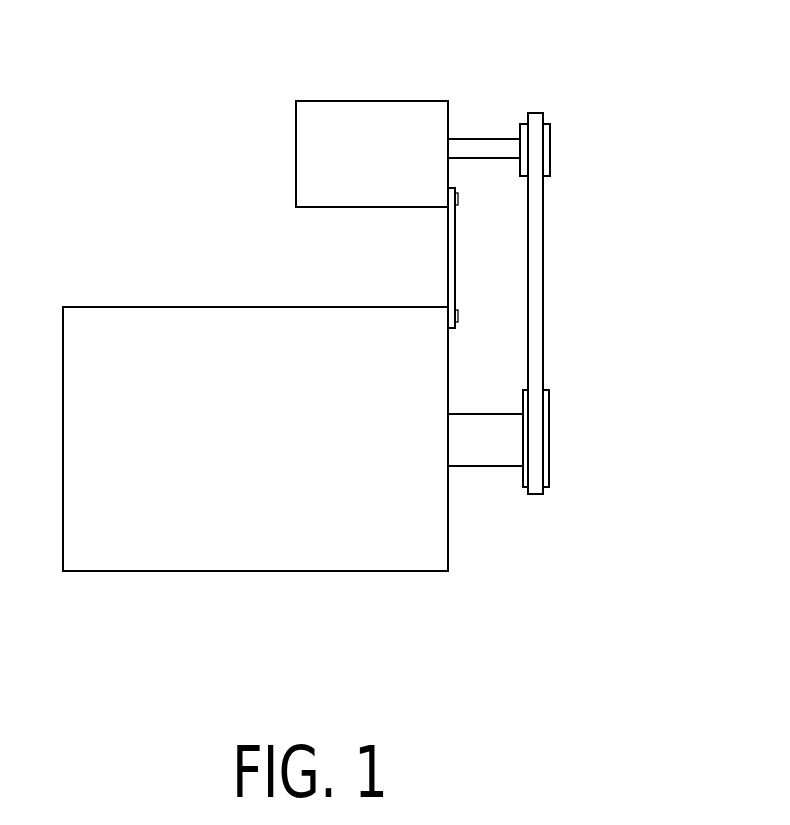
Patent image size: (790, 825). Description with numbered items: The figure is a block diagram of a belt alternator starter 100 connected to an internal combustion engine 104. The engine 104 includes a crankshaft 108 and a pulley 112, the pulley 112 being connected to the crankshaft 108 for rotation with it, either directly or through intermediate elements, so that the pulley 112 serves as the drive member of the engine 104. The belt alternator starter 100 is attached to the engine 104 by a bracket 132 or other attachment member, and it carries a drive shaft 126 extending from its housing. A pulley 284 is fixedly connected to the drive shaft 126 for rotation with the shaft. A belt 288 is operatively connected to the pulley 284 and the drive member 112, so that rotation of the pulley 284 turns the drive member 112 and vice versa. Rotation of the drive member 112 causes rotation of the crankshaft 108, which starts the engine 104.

The belt alternator starter 100 is at (296, 128).
The internal combustion engine 104 is at (63, 350).
The crankshaft 108 is at (482, 466).
The pulley 112 is at (548, 390).
The drive shaft 126 is at (481, 139).
The bracket 132 is at (448, 257).
The pulley 284 is at (552, 150).
The belt 288 is at (543, 260).